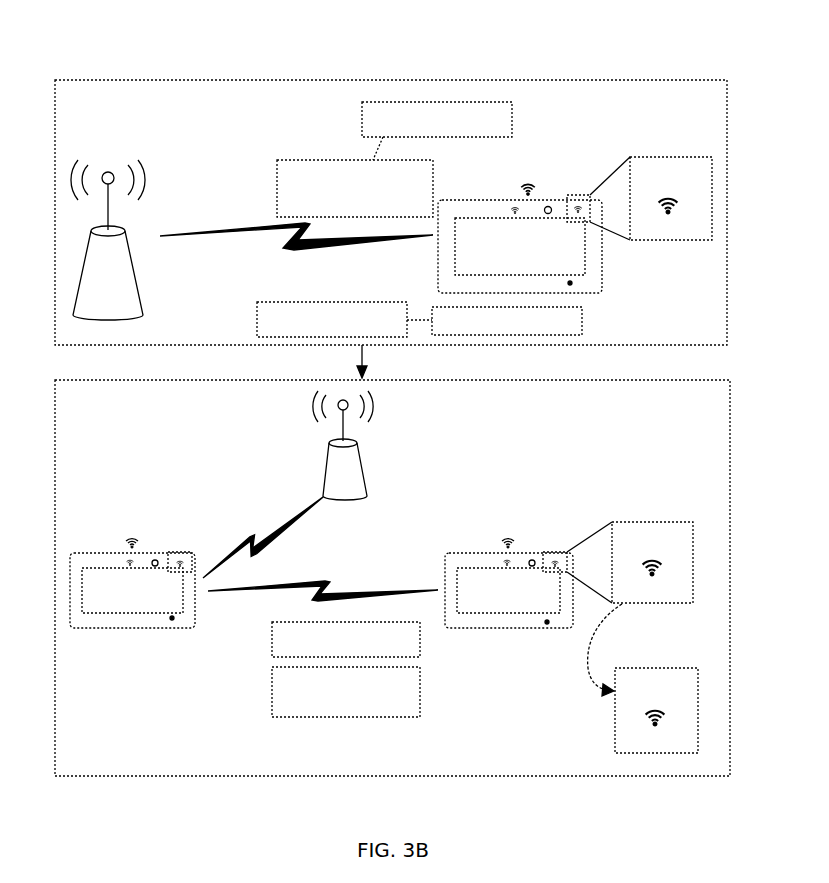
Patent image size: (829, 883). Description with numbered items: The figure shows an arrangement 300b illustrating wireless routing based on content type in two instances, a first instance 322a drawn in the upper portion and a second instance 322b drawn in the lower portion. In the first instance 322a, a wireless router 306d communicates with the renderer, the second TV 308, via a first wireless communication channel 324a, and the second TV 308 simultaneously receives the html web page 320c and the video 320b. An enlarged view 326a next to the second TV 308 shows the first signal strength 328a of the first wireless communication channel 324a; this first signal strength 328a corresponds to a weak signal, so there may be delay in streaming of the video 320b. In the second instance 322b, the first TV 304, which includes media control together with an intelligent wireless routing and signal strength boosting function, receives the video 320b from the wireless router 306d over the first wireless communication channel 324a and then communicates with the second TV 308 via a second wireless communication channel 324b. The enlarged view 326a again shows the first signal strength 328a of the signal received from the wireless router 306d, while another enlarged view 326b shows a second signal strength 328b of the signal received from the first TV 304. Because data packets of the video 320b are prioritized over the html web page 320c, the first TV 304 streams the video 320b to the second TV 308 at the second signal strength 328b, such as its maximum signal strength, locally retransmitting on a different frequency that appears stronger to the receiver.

The arrangement 300b is at (682, 60).
The first instance 322a is at (55, 237).
The second instance 322b is at (55, 527).
The wireless router 306d is at (125, 238).
The first wireless communication channel 324a is at (213, 227).
The second wireless communication channel 324b is at (327, 582).
The second TV 308 is at (490, 200).
The first TV 304 is at (90, 553).
The enlarged view 326a is at (660, 157).
The another enlarged view 326b is at (647, 522).
The first signal strength 328a is at (668, 212).
The second signal strength 328b is at (655, 575).
The video 320b is at (338, 479).
The html web page 320c is at (352, 438).